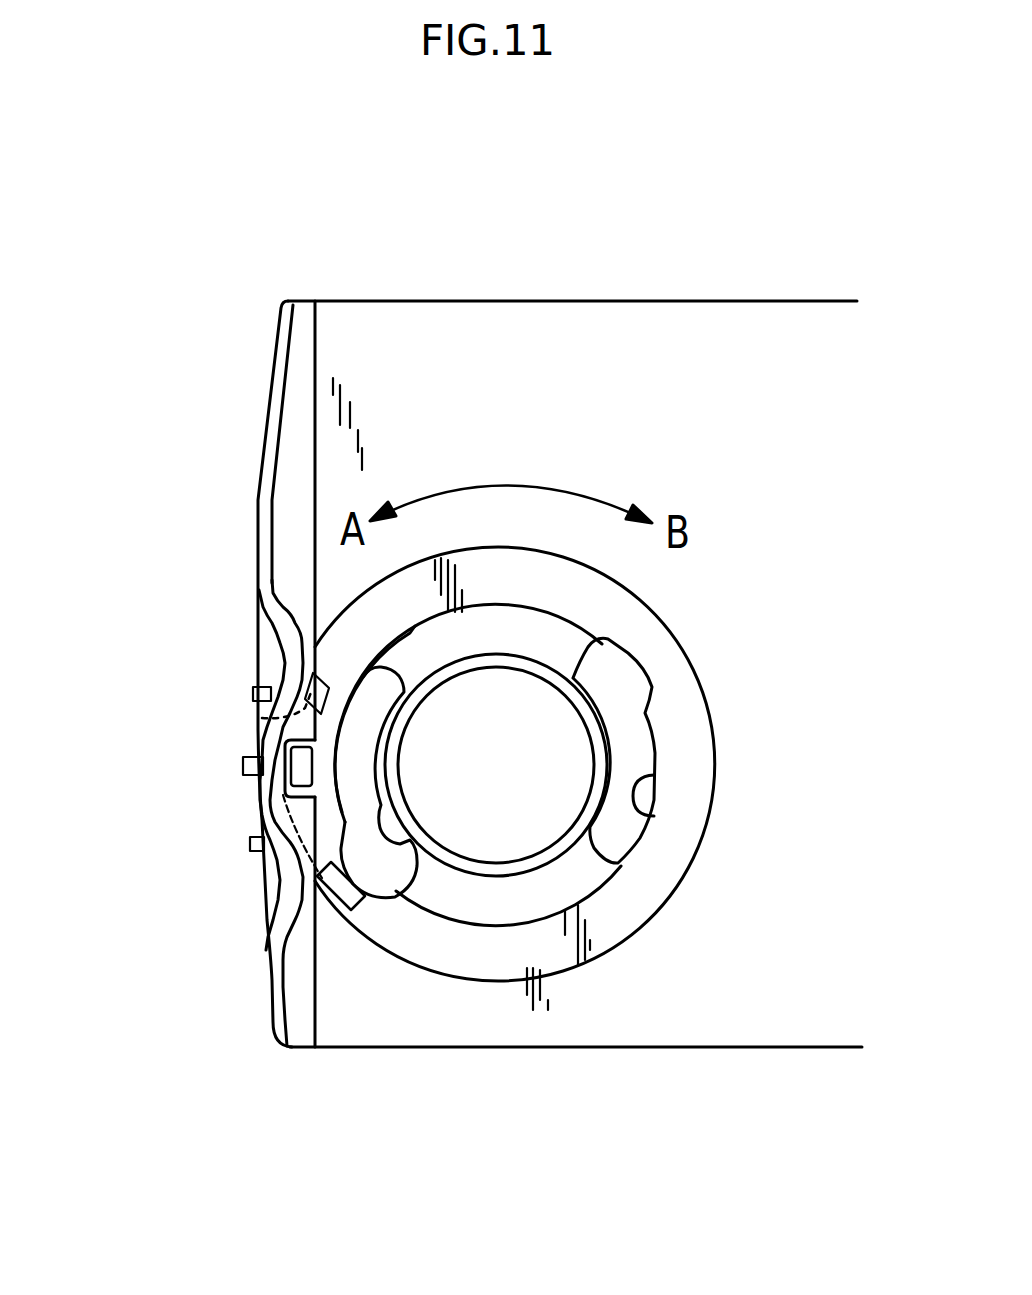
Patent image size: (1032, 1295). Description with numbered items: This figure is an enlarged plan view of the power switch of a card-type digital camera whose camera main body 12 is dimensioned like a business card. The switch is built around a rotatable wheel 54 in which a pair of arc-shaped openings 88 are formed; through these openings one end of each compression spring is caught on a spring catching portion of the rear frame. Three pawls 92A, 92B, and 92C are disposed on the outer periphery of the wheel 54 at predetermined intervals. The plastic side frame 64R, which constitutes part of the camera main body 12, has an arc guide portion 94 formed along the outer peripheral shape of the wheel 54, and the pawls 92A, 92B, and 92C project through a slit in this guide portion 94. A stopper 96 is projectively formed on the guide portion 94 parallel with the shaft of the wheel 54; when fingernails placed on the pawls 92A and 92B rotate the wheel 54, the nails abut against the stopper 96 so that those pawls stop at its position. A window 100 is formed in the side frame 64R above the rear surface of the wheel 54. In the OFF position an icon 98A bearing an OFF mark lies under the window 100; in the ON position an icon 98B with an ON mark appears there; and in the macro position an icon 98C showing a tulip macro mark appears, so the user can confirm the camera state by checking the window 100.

The camera main body 12 is at (442, 337).
The side frame 64R is at (295, 348).
The arc guide portion 94 is at (277, 665).
The pawl 92C is at (262, 693).
The icon 98C is at (262, 718).
The pawl 92B is at (243, 765).
The window 100 is at (290, 780).
The icon 98B is at (250, 842).
The pawl 92A is at (256, 842).
The stopper 96 is at (265, 863).
The wheel 54 is at (474, 950).
The openings 88 is at (382, 795).
The icon 98A is at (362, 907).